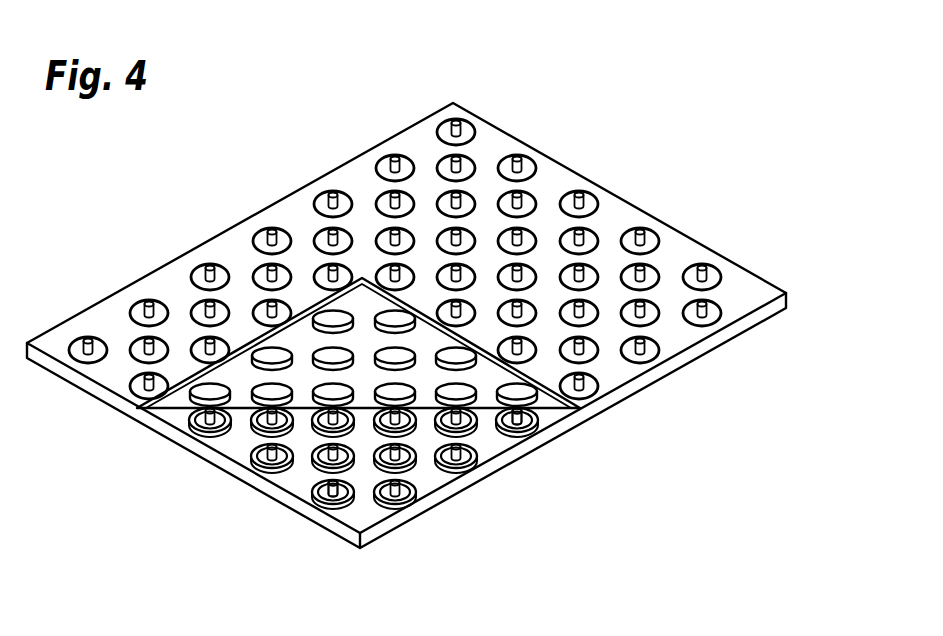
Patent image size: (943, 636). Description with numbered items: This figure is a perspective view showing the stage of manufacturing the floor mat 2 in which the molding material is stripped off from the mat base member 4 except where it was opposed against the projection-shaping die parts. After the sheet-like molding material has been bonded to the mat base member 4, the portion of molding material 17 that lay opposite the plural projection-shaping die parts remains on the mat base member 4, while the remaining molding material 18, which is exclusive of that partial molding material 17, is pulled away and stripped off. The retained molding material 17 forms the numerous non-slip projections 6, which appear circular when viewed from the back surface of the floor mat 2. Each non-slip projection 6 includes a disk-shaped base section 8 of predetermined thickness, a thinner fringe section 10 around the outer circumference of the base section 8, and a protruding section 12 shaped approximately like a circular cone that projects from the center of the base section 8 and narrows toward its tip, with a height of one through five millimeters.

The floor mat 2 is at (788, 298).
The mat base member 4 is at (704, 350).
The non-slip projections 6 is at (394, 331).
The molding material 17 is at (520, 164).
The molding material 18 is at (372, 300).
The base sections 8 is at (528, 432).
The fringe sections 10 is at (514, 416).
The protruding sections 12 is at (533, 417).